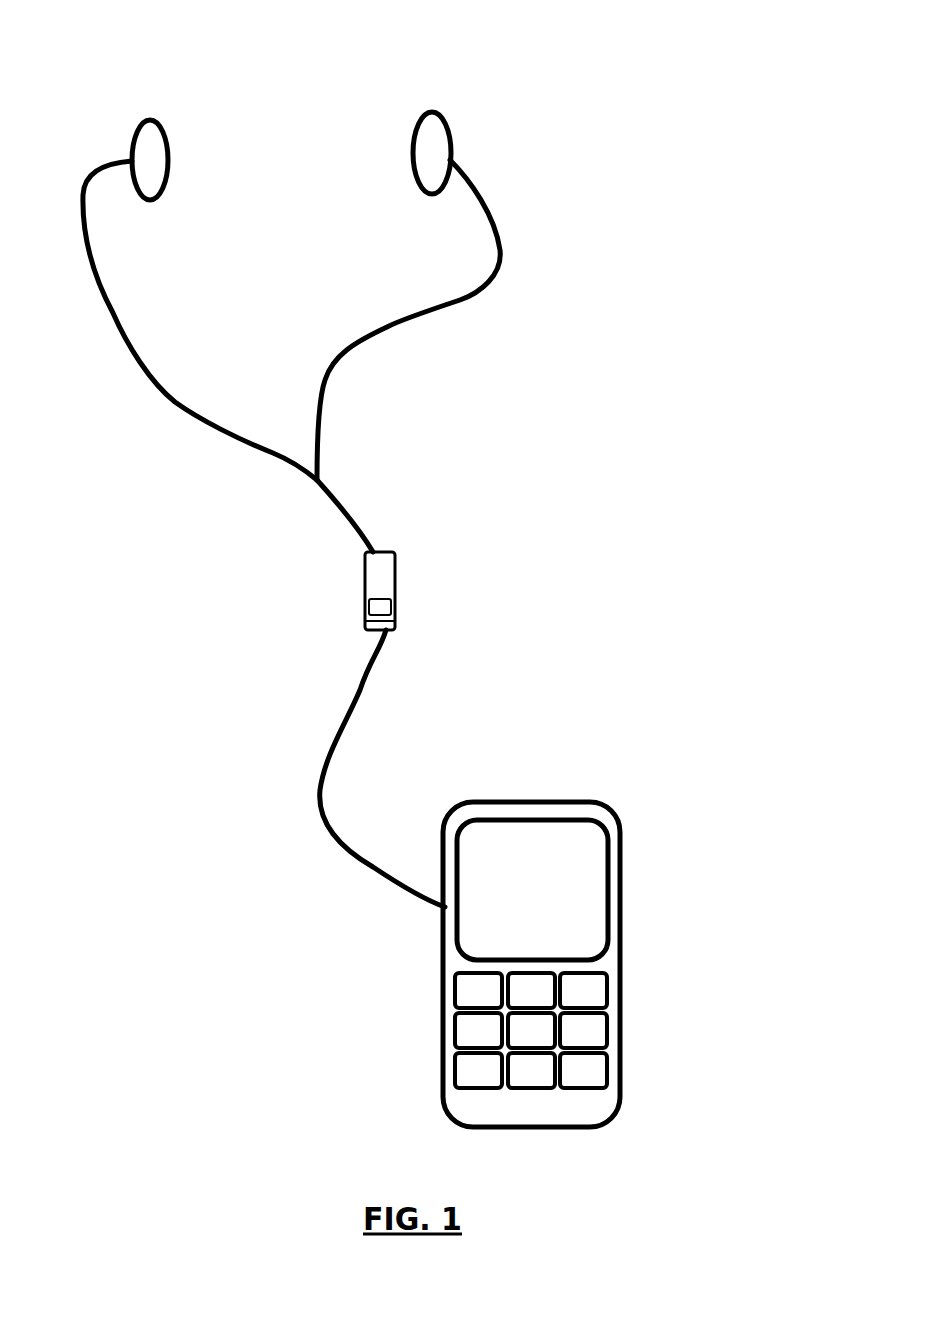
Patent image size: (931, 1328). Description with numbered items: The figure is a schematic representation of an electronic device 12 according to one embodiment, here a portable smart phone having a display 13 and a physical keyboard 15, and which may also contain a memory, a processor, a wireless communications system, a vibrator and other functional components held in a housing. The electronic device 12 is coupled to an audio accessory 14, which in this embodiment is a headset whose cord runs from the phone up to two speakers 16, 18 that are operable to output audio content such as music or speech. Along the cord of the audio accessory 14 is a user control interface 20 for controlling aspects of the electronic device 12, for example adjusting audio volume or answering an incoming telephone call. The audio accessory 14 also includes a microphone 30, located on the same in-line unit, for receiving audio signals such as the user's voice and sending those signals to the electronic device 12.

The electronic device 12 is at (587, 802).
The display 13 is at (593, 883).
The audio accessory 14 is at (320, 777).
The physical keyboard 15 is at (600, 997).
The speaker 16 is at (137, 127).
The speaker 18 is at (442, 112).
The user control interface 20 is at (395, 568).
The microphone 30 is at (367, 617).